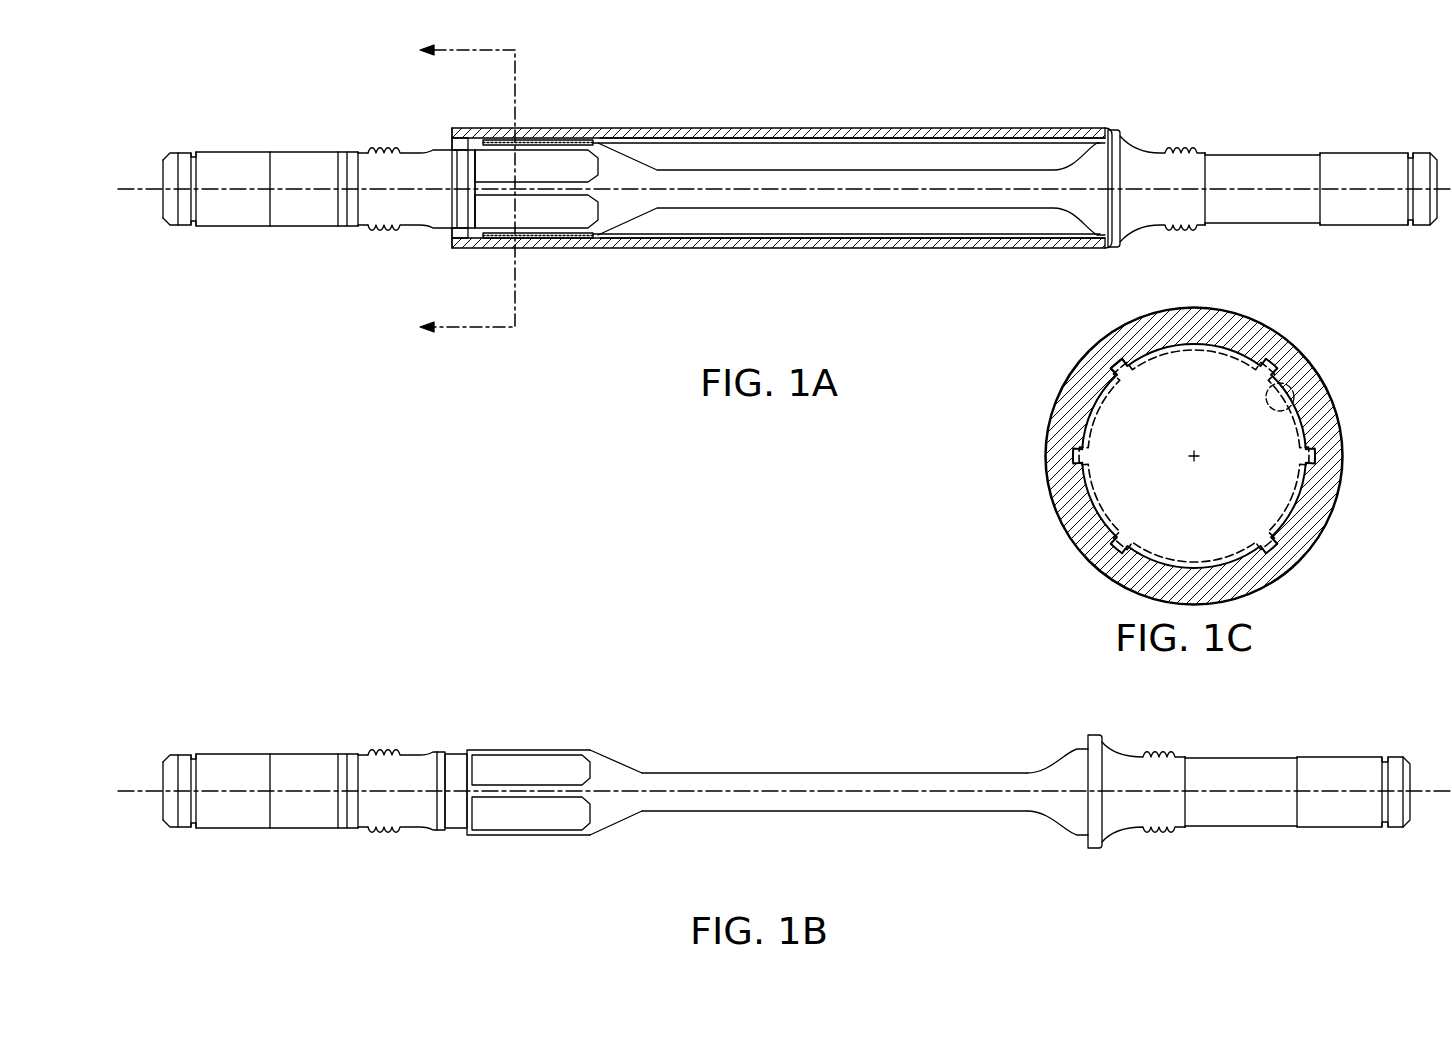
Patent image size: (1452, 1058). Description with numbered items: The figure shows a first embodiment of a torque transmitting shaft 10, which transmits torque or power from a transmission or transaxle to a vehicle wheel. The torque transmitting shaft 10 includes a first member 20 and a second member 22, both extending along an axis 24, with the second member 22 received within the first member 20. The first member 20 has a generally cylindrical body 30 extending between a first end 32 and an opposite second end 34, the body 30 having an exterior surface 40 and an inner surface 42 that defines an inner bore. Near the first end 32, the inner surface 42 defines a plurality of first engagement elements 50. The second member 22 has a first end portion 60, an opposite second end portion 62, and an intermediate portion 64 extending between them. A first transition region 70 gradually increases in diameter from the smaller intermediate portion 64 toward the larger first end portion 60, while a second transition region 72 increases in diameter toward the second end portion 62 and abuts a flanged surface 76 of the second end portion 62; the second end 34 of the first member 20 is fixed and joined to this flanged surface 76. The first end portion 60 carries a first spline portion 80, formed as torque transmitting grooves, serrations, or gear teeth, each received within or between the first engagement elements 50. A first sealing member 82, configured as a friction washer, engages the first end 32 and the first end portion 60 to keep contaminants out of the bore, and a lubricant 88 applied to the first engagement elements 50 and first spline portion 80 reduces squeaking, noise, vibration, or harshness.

In FIG. 1A, the torque transmitting shaft 10 is at (303, 105).
In FIG. 1A, the first member 20 is at (765, 148).
In FIG. 1C, the first member 20 is at (1215, 332).
In FIG. 1C, the second member 22 is at (1322, 390).
In FIG. 1B, the second member 22 is at (497, 723).
In FIG. 1A, the axis 24 is at (132, 192).
In FIG. 1C, the axis 24 is at (1197, 455).
In FIG. 1B, the axis 24 is at (132, 794).
In FIG. 1A, the body 30 is at (932, 130).
In FIG. 1A, the first end 32 is at (450, 131).
In FIG. 1A, the second end 34 is at (1106, 129).
In FIG. 1A, the exterior surface 40 is at (668, 128).
In FIG. 1A, the inner surface 42 is at (712, 140).
In FIG. 1A, the plurality of first engagement elements 50 is at (503, 141).
In FIG. 1C, the plurality of first engagement elements 50 is at (1155, 347).
In FIG. 1A, the first end portion 60 is at (537, 170).
In FIG. 1B, the first end portion 60 is at (540, 751).
In FIG. 1A, the second end portion 62 is at (1168, 178).
In FIG. 1B, the second end portion 62 is at (1125, 781).
In FIG. 1A, the intermediate portion 64 is at (822, 165).
In FIG. 1B, the intermediate portion 64 is at (822, 772).
In FIG. 1B, the first transition region 70 is at (615, 760).
In FIG. 1B, the second transition region 72 is at (1058, 752).
In FIG. 1A, the flanged surface 76 is at (1104, 168).
In FIG. 1B, the flanged surface 76 is at (1086, 740).
In FIG. 1A, the first spline portion 80 is at (540, 218).
In FIG. 1C, the first spline portion 80 is at (1125, 362).
In FIG. 1B, the first spline portion 80 is at (540, 820).
In FIG. 1A, the first sealing member 82 is at (455, 233).
In FIG. 1A, the lubricant 88 is at (523, 237).